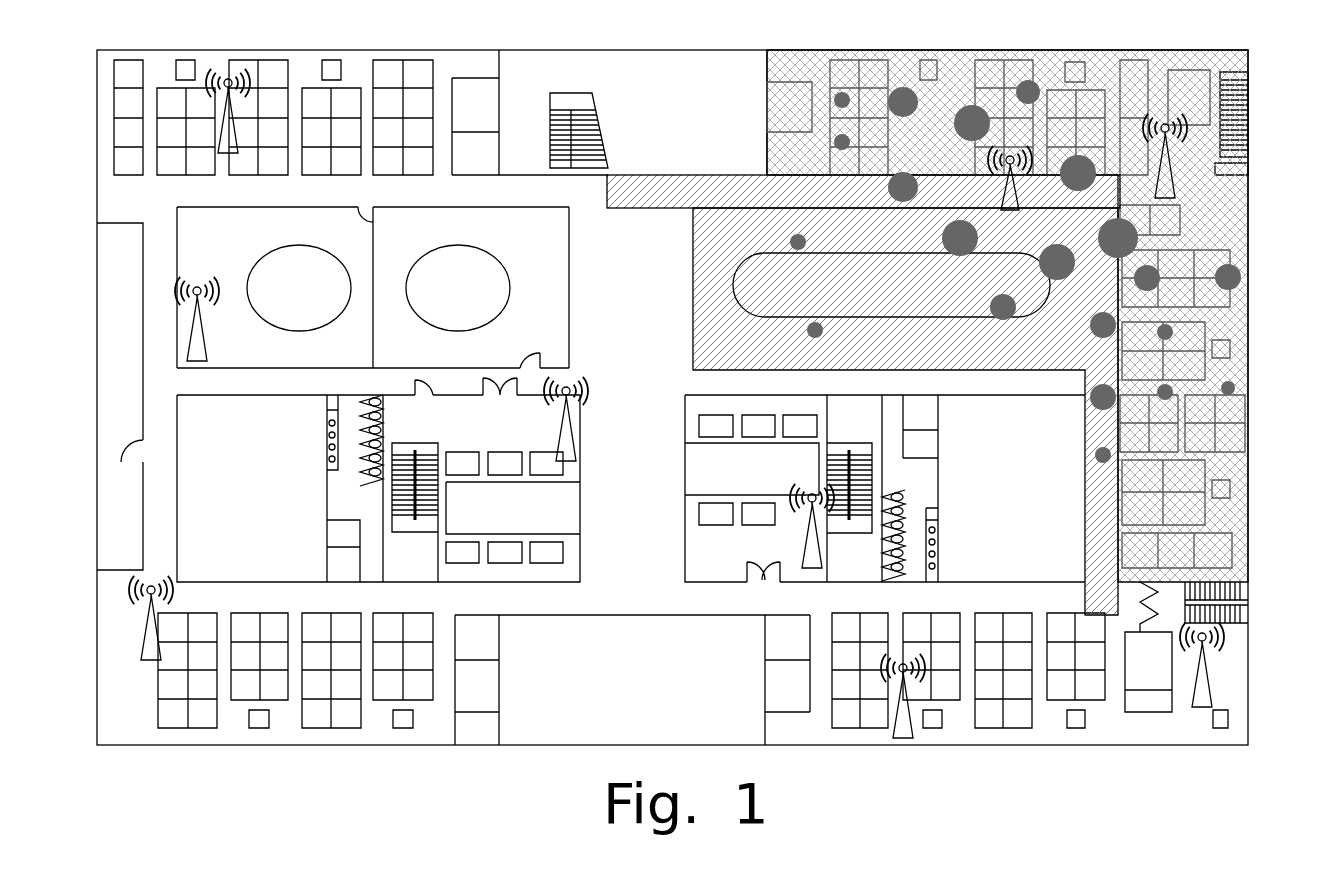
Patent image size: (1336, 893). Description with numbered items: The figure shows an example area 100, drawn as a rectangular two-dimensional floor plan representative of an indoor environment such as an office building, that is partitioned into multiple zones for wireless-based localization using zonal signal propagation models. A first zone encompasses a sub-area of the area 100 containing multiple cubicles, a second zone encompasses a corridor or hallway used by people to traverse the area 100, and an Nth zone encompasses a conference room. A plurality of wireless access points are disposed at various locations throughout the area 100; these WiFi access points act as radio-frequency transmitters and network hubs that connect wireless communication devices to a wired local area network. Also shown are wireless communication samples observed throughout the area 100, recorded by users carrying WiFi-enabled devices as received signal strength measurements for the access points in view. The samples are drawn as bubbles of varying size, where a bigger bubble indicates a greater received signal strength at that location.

The area 100 is at (195, 785).